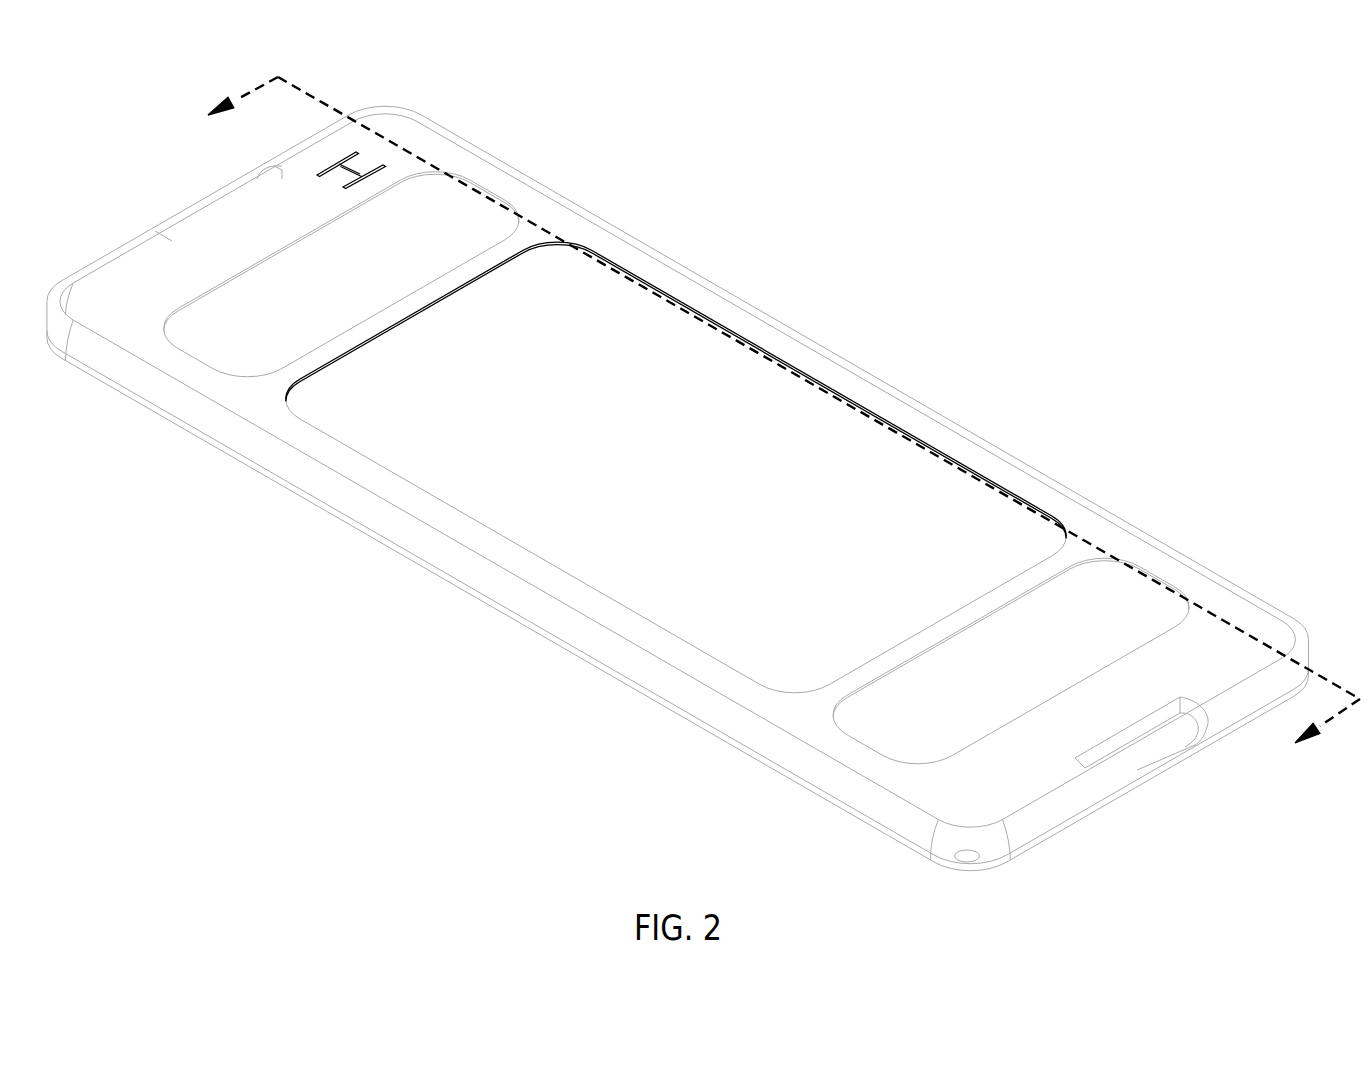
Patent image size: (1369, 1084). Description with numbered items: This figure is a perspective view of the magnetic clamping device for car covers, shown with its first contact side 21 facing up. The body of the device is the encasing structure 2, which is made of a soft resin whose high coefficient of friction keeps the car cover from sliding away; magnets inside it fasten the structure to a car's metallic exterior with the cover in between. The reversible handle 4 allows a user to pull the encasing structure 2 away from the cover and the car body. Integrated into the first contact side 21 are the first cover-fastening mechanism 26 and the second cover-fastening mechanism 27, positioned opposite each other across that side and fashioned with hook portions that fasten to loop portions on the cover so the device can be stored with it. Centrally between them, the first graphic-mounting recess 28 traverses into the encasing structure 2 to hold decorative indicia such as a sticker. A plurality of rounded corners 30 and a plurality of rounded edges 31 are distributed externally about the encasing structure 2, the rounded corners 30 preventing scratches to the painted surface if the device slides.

The encasing structure 2 is at (684, 481).
The reversible handle 4 is at (257, 189).
The first contact side 21 is at (688, 293).
The first cover-fastening mechanism 26 is at (1011, 661).
The second cover-fastening mechanism 27 is at (341, 274).
The first graphic-mounting recess 28 is at (676, 467).
The plurality of rounded corners 30 is at (393, 110).
The plurality of rounded edges 31 is at (125, 248).